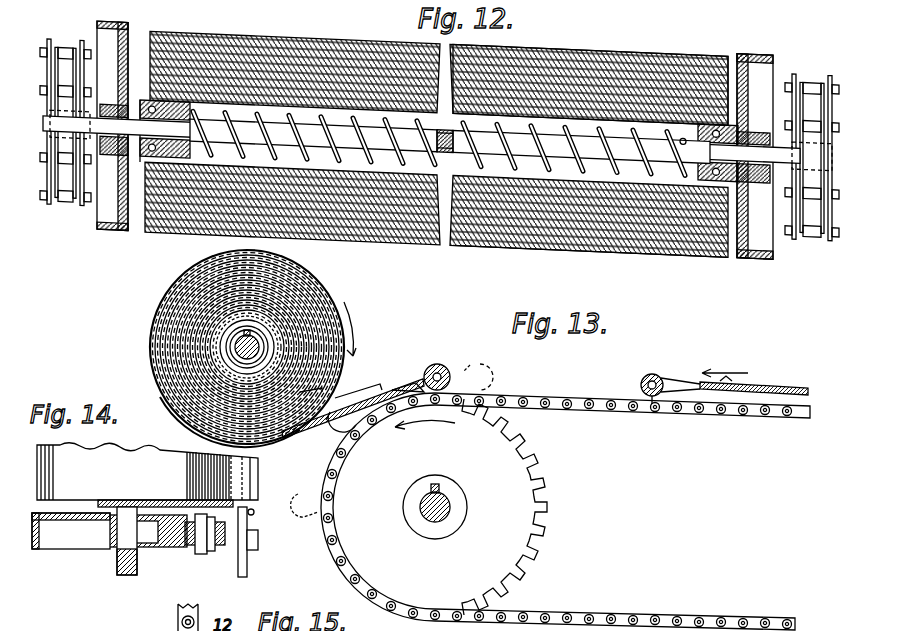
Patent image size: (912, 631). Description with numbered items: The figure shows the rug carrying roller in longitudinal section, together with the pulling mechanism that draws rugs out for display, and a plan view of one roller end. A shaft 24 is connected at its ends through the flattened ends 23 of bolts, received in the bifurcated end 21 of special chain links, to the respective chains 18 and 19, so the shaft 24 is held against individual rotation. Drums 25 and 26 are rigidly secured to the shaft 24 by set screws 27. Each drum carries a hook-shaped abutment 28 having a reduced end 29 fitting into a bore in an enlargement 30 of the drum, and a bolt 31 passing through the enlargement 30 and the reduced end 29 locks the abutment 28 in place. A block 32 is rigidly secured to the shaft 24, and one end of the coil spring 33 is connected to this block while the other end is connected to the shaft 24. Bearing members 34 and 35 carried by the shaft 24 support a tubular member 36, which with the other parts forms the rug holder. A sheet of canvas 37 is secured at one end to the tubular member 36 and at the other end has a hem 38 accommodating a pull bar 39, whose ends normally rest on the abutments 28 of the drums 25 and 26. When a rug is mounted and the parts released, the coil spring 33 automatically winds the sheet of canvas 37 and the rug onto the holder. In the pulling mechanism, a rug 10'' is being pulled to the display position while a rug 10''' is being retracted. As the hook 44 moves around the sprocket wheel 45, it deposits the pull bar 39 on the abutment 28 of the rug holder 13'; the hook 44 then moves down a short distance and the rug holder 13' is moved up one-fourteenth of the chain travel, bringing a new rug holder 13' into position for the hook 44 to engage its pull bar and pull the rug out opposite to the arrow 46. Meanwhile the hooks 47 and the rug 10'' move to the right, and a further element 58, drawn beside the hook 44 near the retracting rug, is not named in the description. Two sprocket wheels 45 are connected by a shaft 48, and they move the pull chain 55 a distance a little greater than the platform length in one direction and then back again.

In FIG. 13, the rug 10'' is at (754, 376).
In FIG. 13, the rug 10''' is at (353, 399).
In FIG. 12, the rug holder 13' is at (436, 159).
In FIG. 13, the rug holder 13' is at (216, 347).
In FIG. 14, the rug holder 13' is at (147, 462).
In FIG. 12, the chain 18 is at (57, 55).
In FIG. 12, the chain 19 is at (808, 230).
In FIG. 12, the bifurcated end 21 is at (66, 160).
In FIG. 12, the flattened end 23 is at (86, 110).
In FIG. 14, the flattened end 23 is at (118, 572).
In FIG. 12, the shaft 24 is at (108, 143).
In FIG. 13, the shaft 24 is at (240, 347).
In FIG. 14, the shaft 24 is at (125, 538).
In FIG. 12, the drum 25 is at (110, 231).
In FIG. 14, the drum 25 is at (36, 549).
In FIG. 12, the drum 26 is at (757, 262).
In FIG. 12, the set screw 27 is at (108, 103).
In FIG. 13, the hook-shaped abutment 28 is at (334, 426).
In FIG. 14, the hook-shaped abutment 28 is at (248, 552).
In FIG. 14, the reduced end 29 is at (182, 548).
In FIG. 14, the enlargement 30 is at (199, 555).
In FIG. 14, the bolt 31 is at (210, 552).
In FIG. 12, the block 32 is at (209, 100).
In FIG. 12, the coil spring 33 is at (323, 110).
In FIG. 13, the coil spring 33 is at (215, 326).
In FIG. 12, the bearing member 34 is at (138, 100).
In FIG. 12, the bearing member 35 is at (728, 110).
In FIG. 12, the tubular member 36 is at (603, 80).
In FIG. 13, the tubular member 36 is at (291, 314).
In FIG. 12, the sheet of canvas 37 is at (548, 246).
In FIG. 13, the sheet of canvas 37 is at (188, 420).
In FIG. 14, the sheet of canvas 37 is at (92, 462).
In FIG. 14, the hem 38 is at (247, 484).
In FIG. 13, the pull bar 39 is at (447, 372).
In FIG. 14, the pull bar 39 is at (252, 510).
In FIG. 13, the hook 44 is at (445, 365).
In FIG. 13, the sprocket wheel 45 is at (545, 470).
In FIG. 13, the arrow 46 is at (738, 370).
In FIG. 13, the hook 47 is at (659, 375).
In FIG. 13, the shaft 48 is at (450, 509).
In FIG. 13, the pull chain 55 is at (636, 410).
In FIG. 13, the roller 58 is at (428, 370).